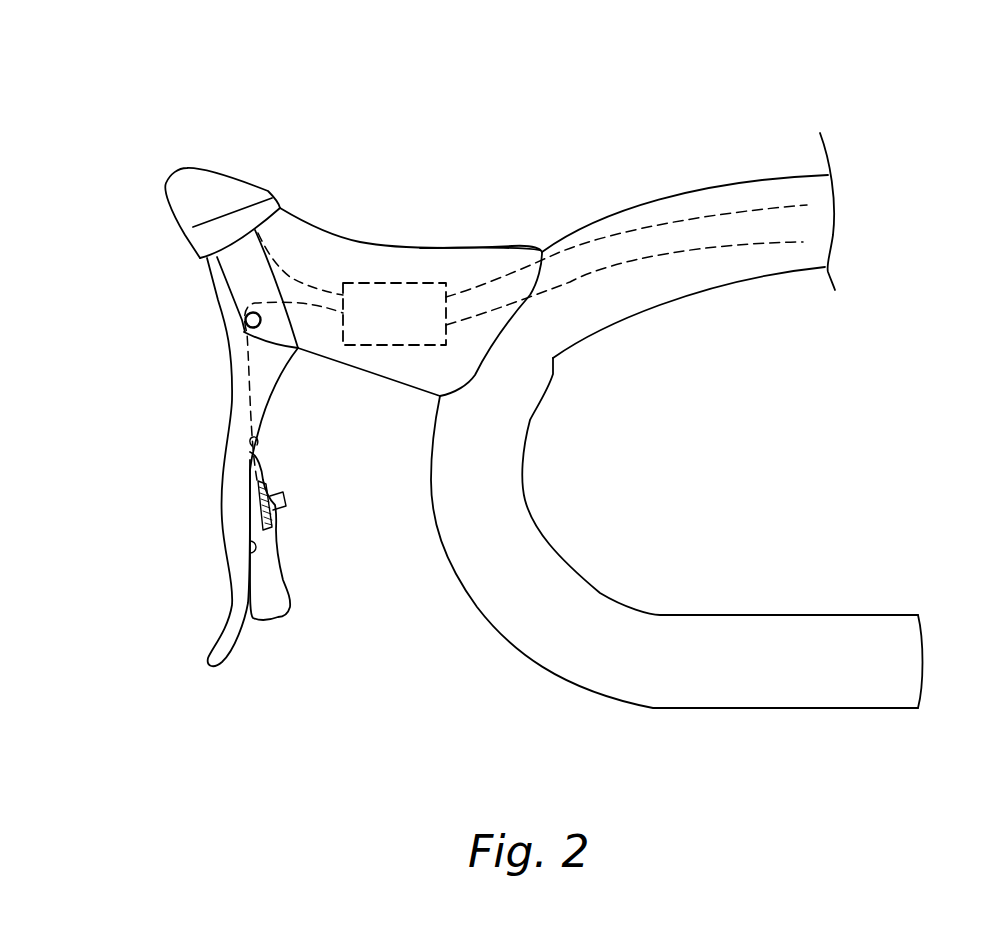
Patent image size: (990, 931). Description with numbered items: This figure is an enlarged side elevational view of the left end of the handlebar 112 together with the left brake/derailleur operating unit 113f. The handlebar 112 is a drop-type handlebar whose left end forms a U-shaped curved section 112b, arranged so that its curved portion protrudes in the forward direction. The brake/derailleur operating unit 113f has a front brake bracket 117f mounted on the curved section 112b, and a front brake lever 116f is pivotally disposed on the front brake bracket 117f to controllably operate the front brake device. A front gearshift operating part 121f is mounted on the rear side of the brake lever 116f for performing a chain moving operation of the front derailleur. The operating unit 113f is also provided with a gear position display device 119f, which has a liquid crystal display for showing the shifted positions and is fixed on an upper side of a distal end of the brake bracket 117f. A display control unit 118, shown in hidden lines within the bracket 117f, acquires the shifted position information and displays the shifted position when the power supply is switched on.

The handlebar 112 is at (695, 167).
The curved section 112b is at (517, 468).
The brake/derailleur operating unit 113f is at (405, 222).
The front brake lever 116f is at (230, 459).
The front brake bracket 117f is at (482, 257).
The display control unit 118 is at (372, 282).
The gear position display device 119f is at (232, 174).
The front gearshift operating part 121f is at (292, 542).